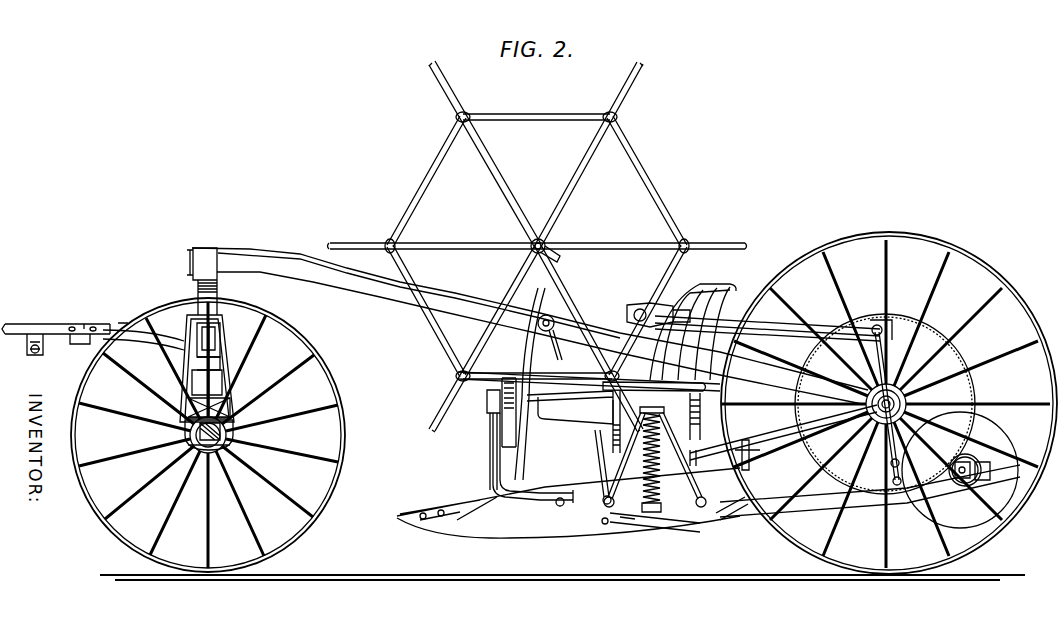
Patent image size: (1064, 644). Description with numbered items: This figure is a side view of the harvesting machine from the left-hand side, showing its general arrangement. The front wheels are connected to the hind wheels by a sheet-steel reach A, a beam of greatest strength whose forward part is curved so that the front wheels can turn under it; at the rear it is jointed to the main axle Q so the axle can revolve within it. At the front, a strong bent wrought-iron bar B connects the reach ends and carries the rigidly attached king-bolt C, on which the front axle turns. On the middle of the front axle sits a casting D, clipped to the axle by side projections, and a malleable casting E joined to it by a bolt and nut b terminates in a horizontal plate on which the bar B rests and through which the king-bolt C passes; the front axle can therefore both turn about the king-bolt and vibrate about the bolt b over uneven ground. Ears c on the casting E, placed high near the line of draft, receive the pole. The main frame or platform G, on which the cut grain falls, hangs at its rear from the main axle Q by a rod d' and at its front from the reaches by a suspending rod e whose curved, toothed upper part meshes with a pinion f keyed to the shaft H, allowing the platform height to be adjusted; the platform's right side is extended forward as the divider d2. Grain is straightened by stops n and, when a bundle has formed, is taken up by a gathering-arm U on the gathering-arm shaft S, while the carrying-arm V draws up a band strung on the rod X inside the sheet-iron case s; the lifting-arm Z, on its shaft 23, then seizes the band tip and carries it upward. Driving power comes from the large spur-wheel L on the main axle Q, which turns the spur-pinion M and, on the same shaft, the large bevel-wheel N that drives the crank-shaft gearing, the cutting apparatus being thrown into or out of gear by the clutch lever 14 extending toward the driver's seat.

The reach A is at (530, 326).
The wrought-iron bar B is at (210, 281).
The king-bolt C is at (207, 368).
The ears or projections c is at (93, 335).
The casting D is at (185, 437).
The malleable casting E is at (208, 364).
The bolt and nut b is at (208, 435).
The shaft H is at (537, 246).
The pinion f is at (547, 348).
The suspending rod e is at (533, 395).
The carrying-arm V is at (535, 434).
The gathering-arm shaft S is at (589, 412).
The gathering-arm U is at (623, 416).
The stop n is at (646, 467).
The sheet-iron case s is at (655, 467).
The divider d2 is at (706, 501).
The main frame or platform G is at (730, 501).
The rod X is at (669, 337).
The lifting-arm Z is at (767, 319).
The main axle Q is at (889, 403).
The large spur-wheel L is at (892, 404).
The shaft of lifting-arm 23 is at (883, 330).
The suspending rod d' is at (881, 408).
The spur-pinion M is at (961, 470).
The large bevel-wheel N is at (847, 445).
The lever 14 is at (747, 448).